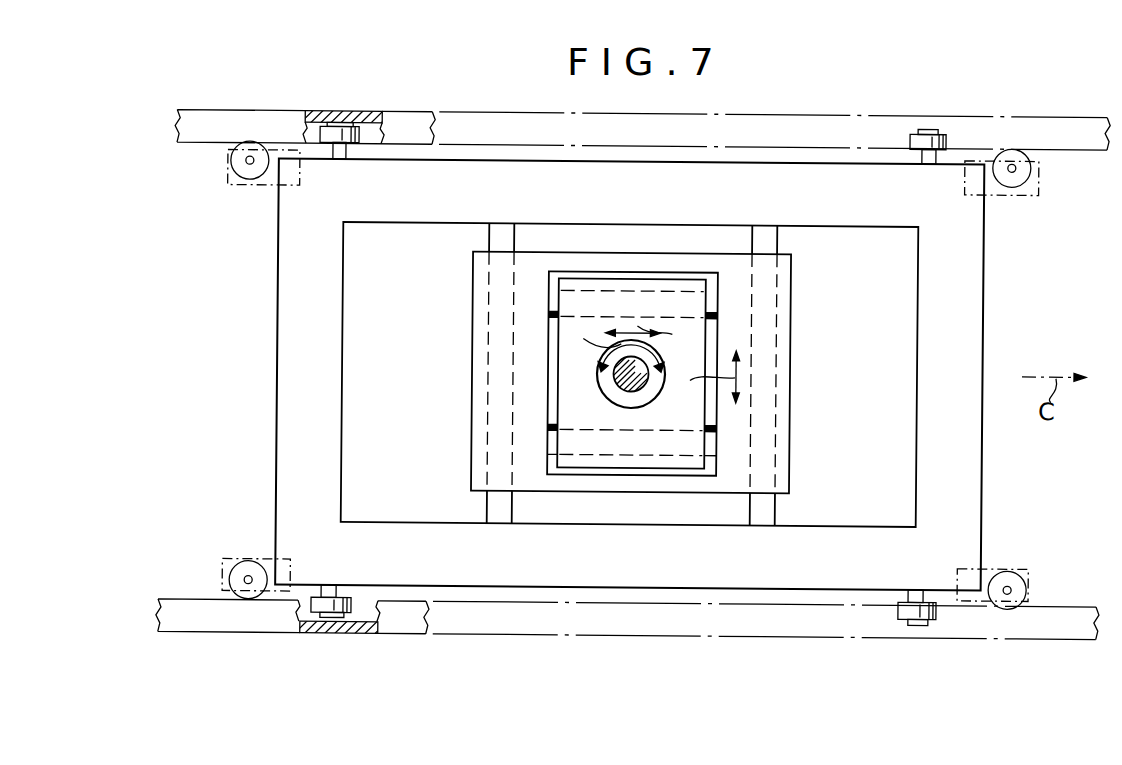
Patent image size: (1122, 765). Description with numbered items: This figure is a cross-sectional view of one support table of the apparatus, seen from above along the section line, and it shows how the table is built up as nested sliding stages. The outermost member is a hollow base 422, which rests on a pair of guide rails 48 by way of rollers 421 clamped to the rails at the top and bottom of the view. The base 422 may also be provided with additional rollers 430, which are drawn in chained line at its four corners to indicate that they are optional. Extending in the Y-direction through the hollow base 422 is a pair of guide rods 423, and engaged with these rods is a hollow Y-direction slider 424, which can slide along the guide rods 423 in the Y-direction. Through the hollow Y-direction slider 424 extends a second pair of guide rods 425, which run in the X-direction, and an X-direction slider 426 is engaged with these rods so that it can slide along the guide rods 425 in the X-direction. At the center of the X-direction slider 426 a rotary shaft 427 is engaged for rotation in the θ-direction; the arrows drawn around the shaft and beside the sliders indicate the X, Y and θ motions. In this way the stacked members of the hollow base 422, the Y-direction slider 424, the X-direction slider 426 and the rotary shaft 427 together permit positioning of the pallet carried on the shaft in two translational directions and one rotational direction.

The guide rails 48 is at (232, 113).
The rollers 421 is at (360, 128).
The hollow base 422 is at (983, 500).
The guide rods 423 is at (488, 506).
The Y-direction slider 424 is at (790, 463).
The guide rods 425 is at (552, 318).
The X-direction slider 426 is at (556, 376).
The rotary shaft 427 is at (650, 372).
The additional rollers 430 is at (266, 186).